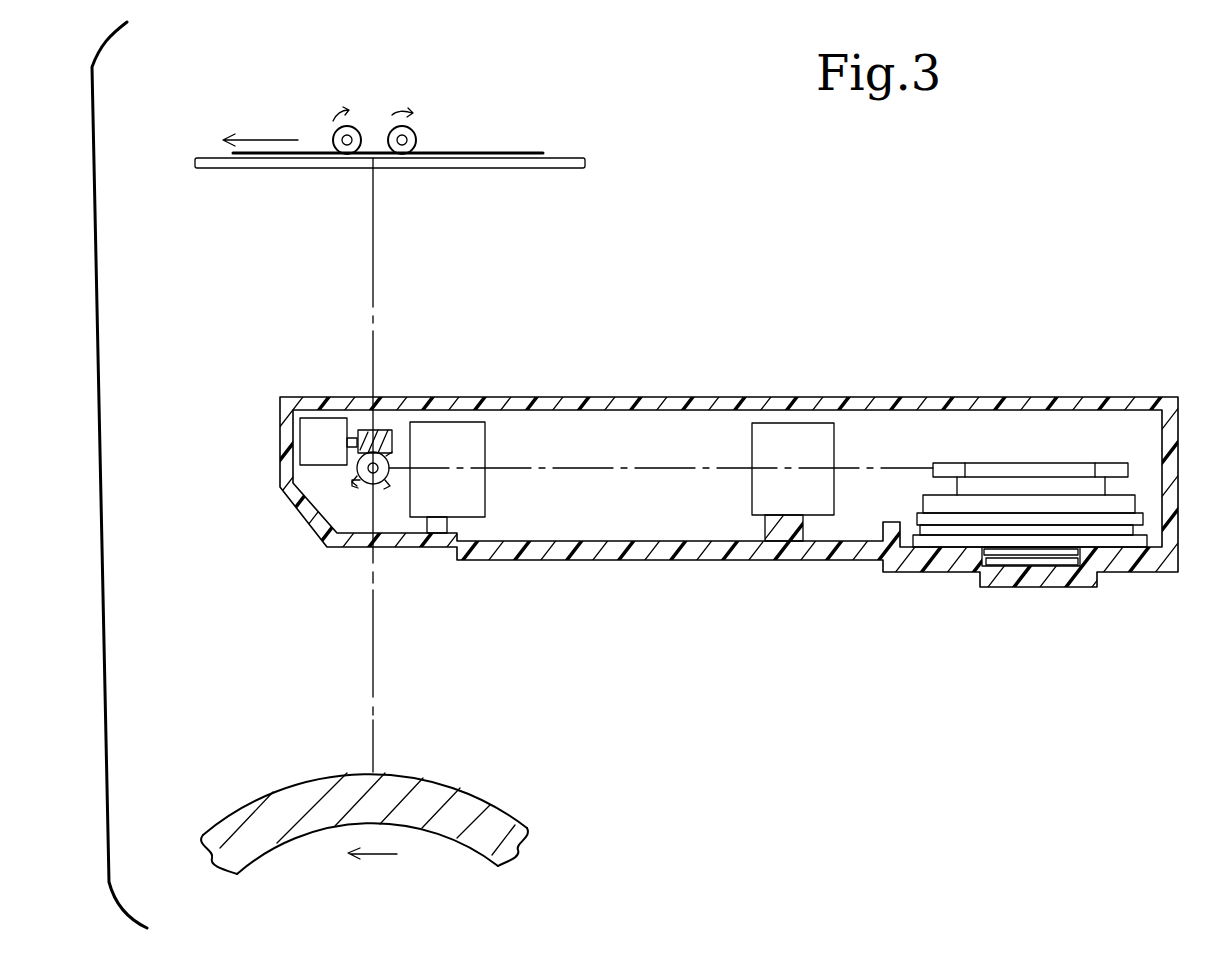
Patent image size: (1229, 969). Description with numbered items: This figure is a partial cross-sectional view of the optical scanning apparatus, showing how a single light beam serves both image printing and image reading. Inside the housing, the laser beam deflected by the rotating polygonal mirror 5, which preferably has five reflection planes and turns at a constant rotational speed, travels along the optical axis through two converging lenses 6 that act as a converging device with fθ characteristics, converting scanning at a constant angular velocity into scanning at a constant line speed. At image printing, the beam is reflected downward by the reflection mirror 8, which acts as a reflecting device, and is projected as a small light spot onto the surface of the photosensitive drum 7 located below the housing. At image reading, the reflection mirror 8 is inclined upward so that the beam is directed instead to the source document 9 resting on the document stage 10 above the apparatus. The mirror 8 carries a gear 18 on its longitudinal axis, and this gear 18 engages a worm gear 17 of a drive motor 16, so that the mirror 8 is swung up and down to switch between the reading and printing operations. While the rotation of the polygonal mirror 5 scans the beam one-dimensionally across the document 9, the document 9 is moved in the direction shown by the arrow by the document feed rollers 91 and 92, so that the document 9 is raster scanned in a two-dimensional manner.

The polygonal mirror 5 is at (945, 463).
The converging lenses 6 is at (456, 421).
The photosensitive drum 7 is at (250, 800).
The reflection mirror 8 is at (354, 481).
The source document 9 is at (543, 152).
The document stage 10 is at (565, 169).
The drive motor 16 is at (299, 412).
The worm gear 17 is at (360, 430).
The gear 18 is at (369, 488).
The document feed roller 91 is at (347, 126).
The document feed roller 92 is at (416, 140).